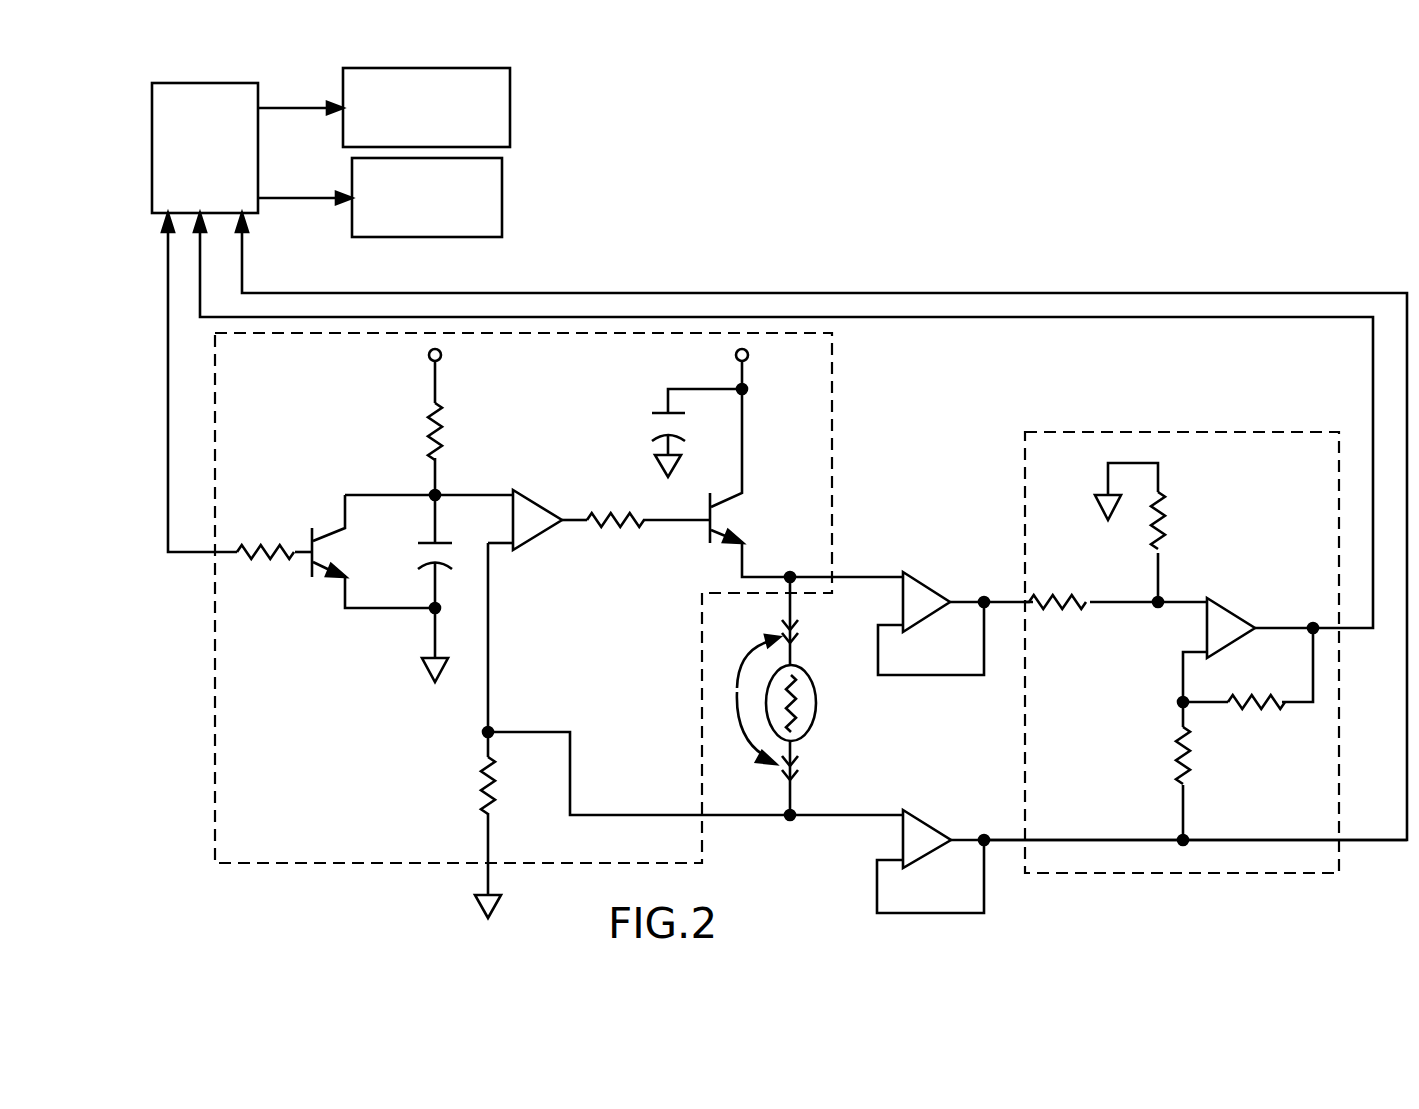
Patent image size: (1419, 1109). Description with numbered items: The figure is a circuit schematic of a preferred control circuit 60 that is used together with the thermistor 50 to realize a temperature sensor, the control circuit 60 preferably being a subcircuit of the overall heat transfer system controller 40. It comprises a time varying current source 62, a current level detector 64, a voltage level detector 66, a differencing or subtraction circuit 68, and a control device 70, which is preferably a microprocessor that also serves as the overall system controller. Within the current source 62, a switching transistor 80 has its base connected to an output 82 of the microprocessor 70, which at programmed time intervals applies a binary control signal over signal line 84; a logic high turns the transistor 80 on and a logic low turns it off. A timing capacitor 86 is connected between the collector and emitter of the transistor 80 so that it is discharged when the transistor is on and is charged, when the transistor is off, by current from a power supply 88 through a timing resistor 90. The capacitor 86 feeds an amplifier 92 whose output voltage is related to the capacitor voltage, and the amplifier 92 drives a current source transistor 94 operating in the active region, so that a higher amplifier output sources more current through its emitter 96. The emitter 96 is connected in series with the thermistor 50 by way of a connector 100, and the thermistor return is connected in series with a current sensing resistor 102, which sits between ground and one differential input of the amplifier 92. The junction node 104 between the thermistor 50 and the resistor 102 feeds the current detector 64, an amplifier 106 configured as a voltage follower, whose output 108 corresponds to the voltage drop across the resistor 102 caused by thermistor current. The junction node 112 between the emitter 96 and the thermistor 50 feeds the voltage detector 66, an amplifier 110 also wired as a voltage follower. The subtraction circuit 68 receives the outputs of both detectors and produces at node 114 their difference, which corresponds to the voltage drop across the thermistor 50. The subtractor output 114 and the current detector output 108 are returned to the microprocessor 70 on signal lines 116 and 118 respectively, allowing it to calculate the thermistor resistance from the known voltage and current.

The heat transfer system controller 40 is at (1114, 190).
The thermistor 50 is at (816, 702).
The control circuit 60 is at (178, 915).
The time varying current source 62 is at (286, 875).
The current level detector 64 is at (922, 866).
The voltage level detector 66 is at (955, 574).
The subtraction circuit 68 is at (1216, 687).
The control device 70 is at (221, 138).
The switching transistor 80 is at (312, 529).
The output of the microprocessor 82 is at (150, 232).
The signal line 84 is at (168, 370).
The timing capacitor 86 is at (424, 543).
The power supply 88 is at (415, 356).
The timing resistor 90 is at (426, 412).
The amplifier 92 is at (550, 510).
The current source transistor 94 is at (708, 506).
The current source transistor emitter 96 is at (725, 542).
The connector 100 is at (740, 699).
The current sensing resistor 102 is at (482, 782).
The junction node 104 is at (790, 822).
The amplifier 106 is at (942, 830).
The output of the current detector 108 is at (980, 845).
The amplifier 110 is at (925, 590).
The junction node 112 is at (792, 573).
The output node 114 is at (1313, 622).
The signal line 116 is at (1226, 318).
The signal line 118 is at (1325, 292).